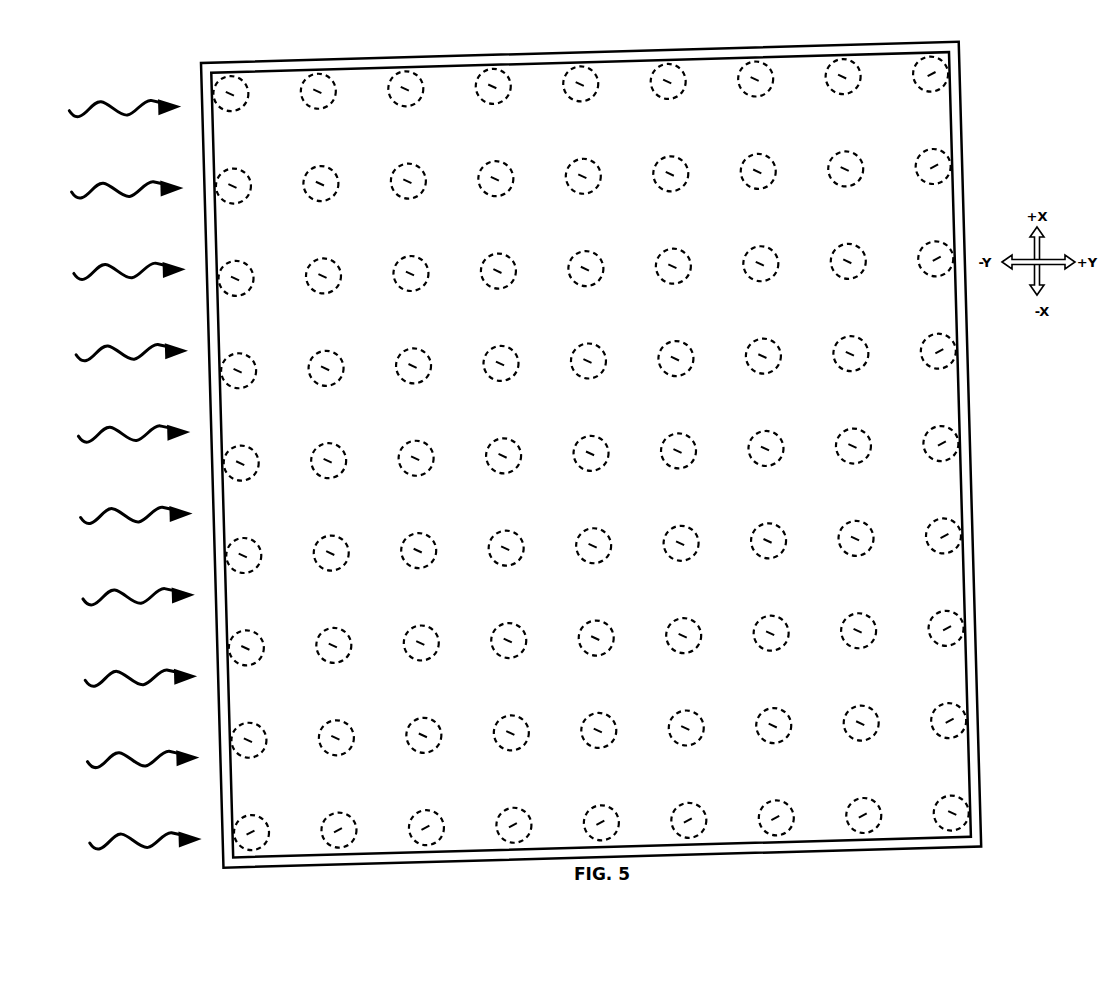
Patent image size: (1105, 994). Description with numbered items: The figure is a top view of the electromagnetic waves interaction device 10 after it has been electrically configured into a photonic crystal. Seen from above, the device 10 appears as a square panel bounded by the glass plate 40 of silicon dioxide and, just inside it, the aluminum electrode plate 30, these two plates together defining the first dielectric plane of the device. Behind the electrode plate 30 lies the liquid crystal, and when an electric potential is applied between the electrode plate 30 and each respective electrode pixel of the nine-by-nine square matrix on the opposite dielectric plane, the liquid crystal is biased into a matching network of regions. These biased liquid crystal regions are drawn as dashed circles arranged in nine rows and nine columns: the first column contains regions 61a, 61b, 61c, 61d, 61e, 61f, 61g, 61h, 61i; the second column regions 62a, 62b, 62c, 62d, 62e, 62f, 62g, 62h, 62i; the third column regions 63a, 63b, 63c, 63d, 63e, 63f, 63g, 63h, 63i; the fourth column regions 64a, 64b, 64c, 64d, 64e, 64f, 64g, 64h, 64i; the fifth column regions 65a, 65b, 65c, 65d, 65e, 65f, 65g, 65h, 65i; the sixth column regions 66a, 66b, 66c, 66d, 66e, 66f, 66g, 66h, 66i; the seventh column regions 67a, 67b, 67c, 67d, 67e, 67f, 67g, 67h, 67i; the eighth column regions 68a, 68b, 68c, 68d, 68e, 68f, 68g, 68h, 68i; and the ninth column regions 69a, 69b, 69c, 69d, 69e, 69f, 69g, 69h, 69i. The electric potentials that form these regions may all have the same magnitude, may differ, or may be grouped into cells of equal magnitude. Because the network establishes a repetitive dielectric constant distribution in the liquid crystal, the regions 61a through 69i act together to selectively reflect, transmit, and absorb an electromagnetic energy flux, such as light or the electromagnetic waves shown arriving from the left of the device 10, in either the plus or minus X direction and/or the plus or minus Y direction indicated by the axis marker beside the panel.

The electromagnetic waves interaction device 10 is at (570, 456).
The electrode plate 30 is at (748, 105).
The glass plate 40 is at (758, 50).
The biased liquid crystal region 61a is at (261, 821).
The biased liquid crystal region 61b is at (259, 752).
The biased liquid crystal region 61c is at (256, 659).
The biased liquid crystal region 61d is at (254, 567).
The biased liquid crystal region 61e is at (251, 475).
The biased liquid crystal region 61f is at (249, 382).
The biased liquid crystal region 61g is at (246, 290).
The biased liquid crystal region 61h is at (243, 197).
The biased liquid crystal region 61i is at (240, 105).
The biased liquid crystal region 62a is at (348, 818).
The biased liquid crystal region 62b is at (346, 749).
The biased liquid crystal region 62c is at (344, 657).
The biased liquid crystal region 62d is at (341, 565).
The biased liquid crystal region 62e is at (339, 472).
The biased liquid crystal region 62f is at (336, 380).
The biased liquid crystal region 62g is at (334, 287).
The biased liquid crystal region 62h is at (331, 195).
The biased liquid crystal region 62i is at (327, 103).
The biased liquid crystal region 63a is at (436, 816).
The biased liquid crystal region 63b is at (434, 747).
The biased liquid crystal region 63c is at (431, 654).
The biased liquid crystal region 63d is at (429, 562).
The biased liquid crystal region 63e is at (426, 470).
The biased liquid crystal region 63f is at (424, 377).
The biased liquid crystal region 63g is at (421, 285).
The biased liquid crystal region 63h is at (418, 193).
The biased liquid crystal region 63i is at (415, 100).
The biased liquid crystal region 64a is at (523, 813).
The biased liquid crystal region 64b is at (521, 744).
The biased liquid crystal region 64c is at (519, 652).
The biased liquid crystal region 64d is at (516, 560).
The biased liquid crystal region 64e is at (514, 467).
The biased liquid crystal region 64f is at (511, 375).
The biased liquid crystal region 64g is at (508, 283).
The biased liquid crystal region 64h is at (506, 190).
The biased liquid crystal region 64i is at (502, 98).
The biased liquid crystal region 65a is at (611, 811).
The biased liquid crystal region 65b is at (609, 742).
The biased liquid crystal region 65c is at (606, 650).
The biased liquid crystal region 65d is at (604, 557).
The biased liquid crystal region 65e is at (601, 465).
The biased liquid crystal region 65f is at (598, 372).
The biased liquid crystal region 65g is at (596, 280).
The biased liquid crystal region 65h is at (593, 188).
The biased liquid crystal region 65i is at (590, 95).
The biased liquid crystal region 66a is at (698, 808).
The biased liquid crystal region 66b is at (696, 739).
The biased liquid crystal region 66c is at (694, 647).
The biased liquid crystal region 66d is at (691, 555).
The biased liquid crystal region 66e is at (689, 462).
The biased liquid crystal region 66f is at (686, 370).
The biased liquid crystal region 66g is at (683, 278).
The biased liquid crystal region 66h is at (681, 185).
The biased liquid crystal region 66i is at (677, 93).
The biased liquid crystal region 67a is at (786, 806).
The biased liquid crystal region 67b is at (784, 737).
The biased liquid crystal region 67c is at (781, 645).
The biased liquid crystal region 67d is at (779, 552).
The biased liquid crystal region 67e is at (776, 460).
The biased liquid crystal region 67f is at (773, 368).
The biased liquid crystal region 67g is at (771, 275).
The biased liquid crystal region 67h is at (768, 183).
The biased liquid crystal region 67i is at (765, 91).
The biased liquid crystal region 68a is at (873, 803).
The biased liquid crystal region 68b is at (871, 735).
The biased liquid crystal region 68c is at (869, 642).
The biased liquid crystal region 68d is at (866, 550).
The biased liquid crystal region 68e is at (863, 457).
The biased liquid crystal region 68f is at (861, 365).
The biased liquid crystal region 68g is at (858, 273).
The biased liquid crystal region 68h is at (856, 180).
The biased liquid crystal region 68i is at (852, 88).
The biased liquid crystal region 69a is at (941, 803).
The biased liquid crystal region 69b is at (939, 734).
The biased liquid crystal region 69c is at (937, 641).
The biased liquid crystal region 69d is at (934, 549).
The biased liquid crystal region 69e is at (932, 457).
The biased liquid crystal region 69f is at (930, 364).
The biased liquid crystal region 69g is at (927, 272).
The biased liquid crystal region 69h is at (924, 180).
The biased liquid crystal region 69i is at (922, 87).